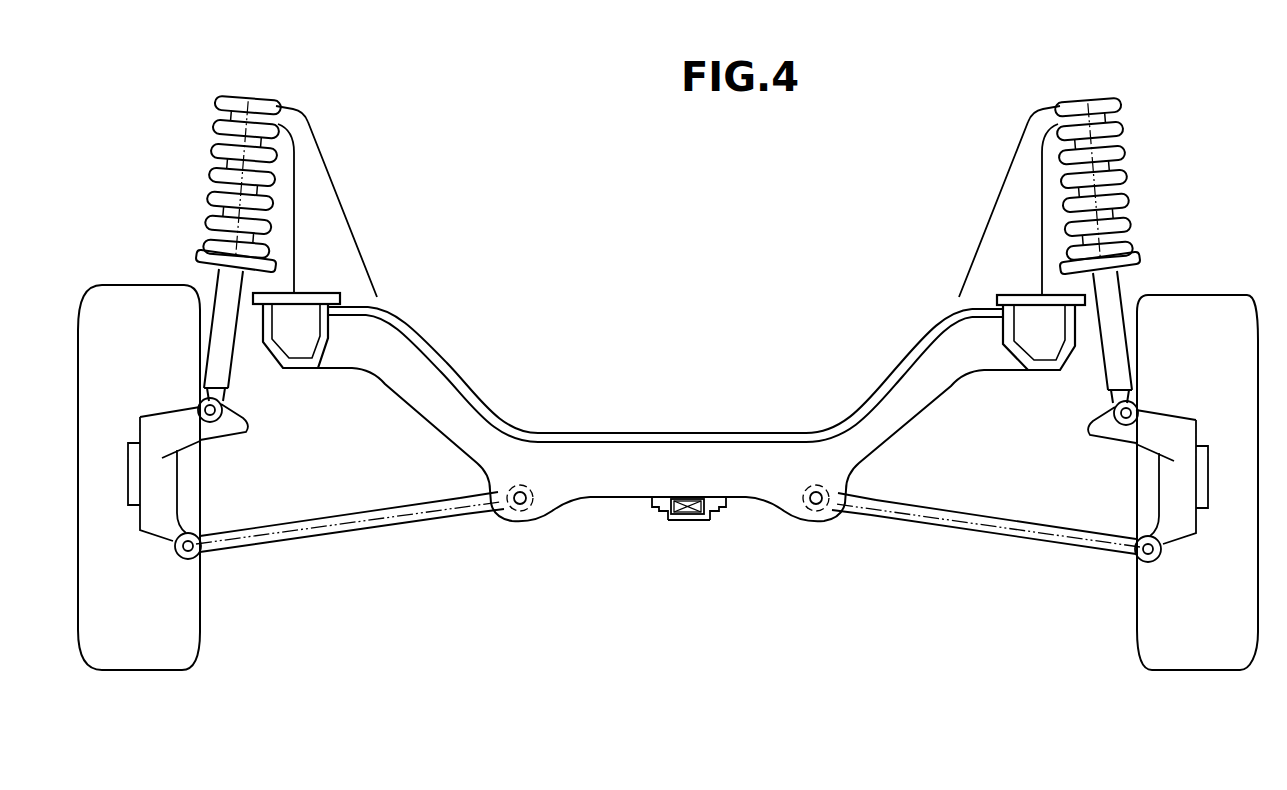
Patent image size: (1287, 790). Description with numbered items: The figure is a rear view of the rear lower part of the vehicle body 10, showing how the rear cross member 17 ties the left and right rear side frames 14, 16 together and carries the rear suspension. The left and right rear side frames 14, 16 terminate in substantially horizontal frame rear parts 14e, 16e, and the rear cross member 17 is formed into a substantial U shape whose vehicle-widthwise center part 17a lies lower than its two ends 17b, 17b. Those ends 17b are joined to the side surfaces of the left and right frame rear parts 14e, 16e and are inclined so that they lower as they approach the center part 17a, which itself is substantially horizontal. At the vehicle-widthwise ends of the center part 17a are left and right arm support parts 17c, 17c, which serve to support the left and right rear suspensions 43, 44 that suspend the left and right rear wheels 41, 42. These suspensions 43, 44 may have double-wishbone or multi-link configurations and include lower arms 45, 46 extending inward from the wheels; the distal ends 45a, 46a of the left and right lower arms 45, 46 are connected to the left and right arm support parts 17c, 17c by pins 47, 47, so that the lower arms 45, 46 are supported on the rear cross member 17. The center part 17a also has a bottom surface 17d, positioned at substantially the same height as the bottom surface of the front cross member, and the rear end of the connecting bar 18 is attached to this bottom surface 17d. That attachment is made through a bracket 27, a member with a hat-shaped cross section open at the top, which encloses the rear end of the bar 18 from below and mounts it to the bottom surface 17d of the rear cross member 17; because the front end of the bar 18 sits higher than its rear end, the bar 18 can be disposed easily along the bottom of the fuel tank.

The vehicle body 10 is at (572, 198).
The left rear side frame 14 is at (297, 320).
The left frame rear part 14e is at (338, 326).
The right rear side frame 16 is at (1040, 317).
The right frame rear part 16e is at (1006, 330).
The rear cross member 17 is at (673, 423).
The center part 17a is at (663, 458).
The ends 17b is at (458, 406).
The arm support parts 17c is at (536, 514).
The bottom surface 17d is at (602, 500).
The connecting bar 18 is at (680, 587).
The bracket 27 is at (681, 576).
The left rear wheel 41 is at (120, 285).
The right rear wheel 42 is at (1198, 295).
The left rear suspension 43 is at (213, 133).
The right rear suspension 44 is at (1124, 146).
The left lower arm 45 is at (352, 541).
The distal end 45a is at (508, 489).
The right lower arm 46 is at (985, 540).
The distal end 46a is at (830, 489).
The pins 47 is at (512, 516).